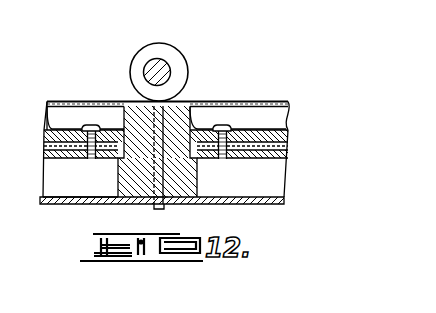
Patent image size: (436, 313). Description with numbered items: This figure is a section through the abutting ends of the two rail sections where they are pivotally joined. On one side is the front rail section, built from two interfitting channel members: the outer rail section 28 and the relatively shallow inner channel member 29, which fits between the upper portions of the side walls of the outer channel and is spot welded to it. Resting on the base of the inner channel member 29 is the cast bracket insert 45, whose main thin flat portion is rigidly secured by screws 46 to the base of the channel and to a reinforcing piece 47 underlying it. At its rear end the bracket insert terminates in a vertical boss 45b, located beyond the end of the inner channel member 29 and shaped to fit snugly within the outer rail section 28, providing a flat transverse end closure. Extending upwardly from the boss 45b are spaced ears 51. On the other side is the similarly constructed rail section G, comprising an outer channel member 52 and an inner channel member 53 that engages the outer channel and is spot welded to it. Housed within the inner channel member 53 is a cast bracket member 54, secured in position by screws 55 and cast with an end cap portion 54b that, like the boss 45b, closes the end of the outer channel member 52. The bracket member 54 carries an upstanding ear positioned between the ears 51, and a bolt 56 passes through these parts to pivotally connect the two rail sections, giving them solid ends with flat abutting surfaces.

The outer rail section 28 is at (75, 204).
The inner channel member 29 is at (45, 152).
The bracket insert 45 is at (51, 129).
The vertical boss 45b is at (143, 187).
The screws 46 is at (92, 125).
The reinforcing piece 47 is at (62, 160).
The spaced ears 51 is at (182, 52).
The outer channel member 52 is at (268, 202).
The inner channel member 53 is at (288, 146).
The bracket member 54 is at (256, 131).
The end cap portion 54b is at (193, 106).
The screws 55 is at (224, 125).
The bolt 56 is at (168, 68).